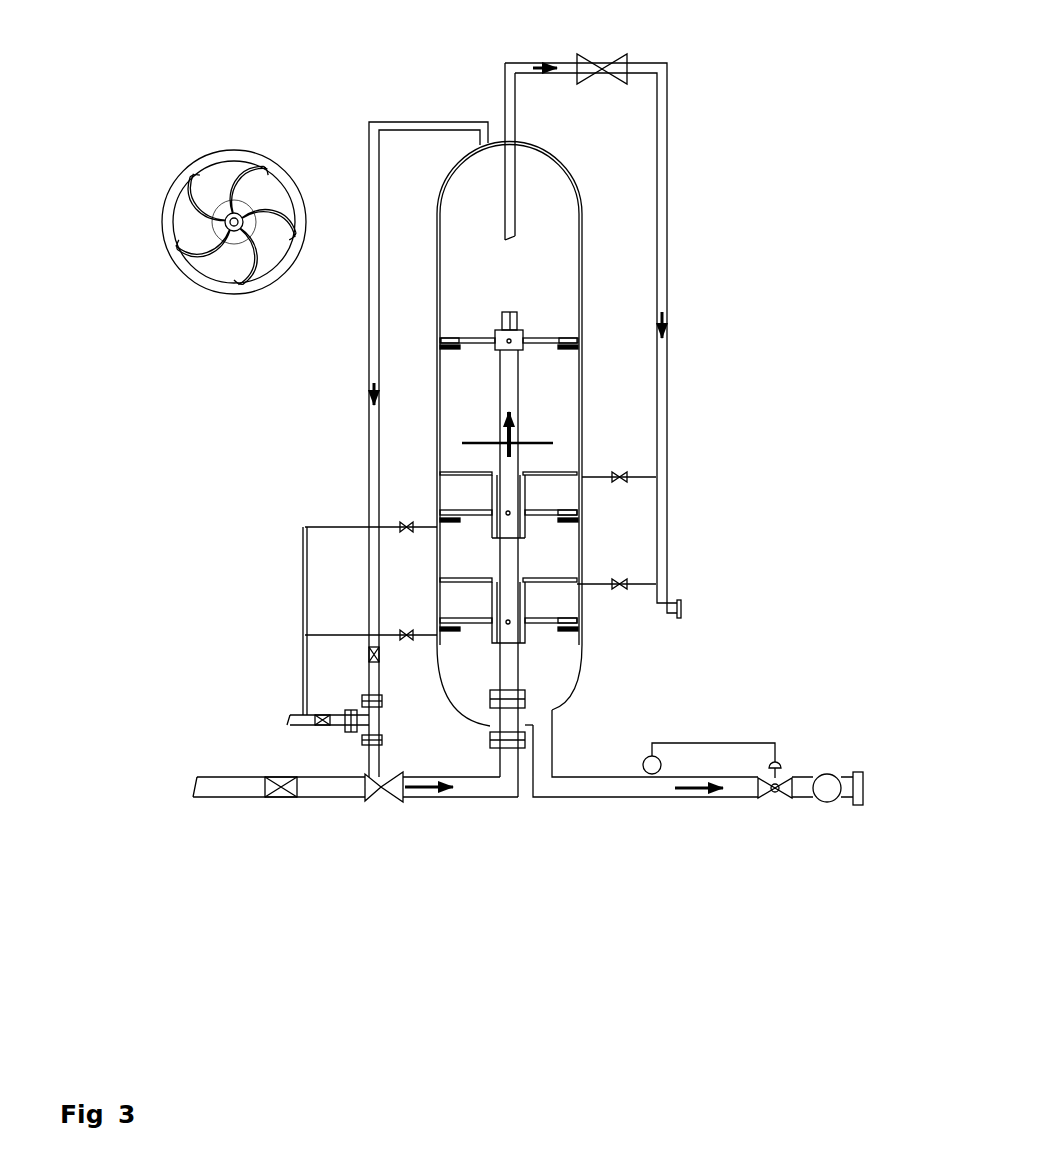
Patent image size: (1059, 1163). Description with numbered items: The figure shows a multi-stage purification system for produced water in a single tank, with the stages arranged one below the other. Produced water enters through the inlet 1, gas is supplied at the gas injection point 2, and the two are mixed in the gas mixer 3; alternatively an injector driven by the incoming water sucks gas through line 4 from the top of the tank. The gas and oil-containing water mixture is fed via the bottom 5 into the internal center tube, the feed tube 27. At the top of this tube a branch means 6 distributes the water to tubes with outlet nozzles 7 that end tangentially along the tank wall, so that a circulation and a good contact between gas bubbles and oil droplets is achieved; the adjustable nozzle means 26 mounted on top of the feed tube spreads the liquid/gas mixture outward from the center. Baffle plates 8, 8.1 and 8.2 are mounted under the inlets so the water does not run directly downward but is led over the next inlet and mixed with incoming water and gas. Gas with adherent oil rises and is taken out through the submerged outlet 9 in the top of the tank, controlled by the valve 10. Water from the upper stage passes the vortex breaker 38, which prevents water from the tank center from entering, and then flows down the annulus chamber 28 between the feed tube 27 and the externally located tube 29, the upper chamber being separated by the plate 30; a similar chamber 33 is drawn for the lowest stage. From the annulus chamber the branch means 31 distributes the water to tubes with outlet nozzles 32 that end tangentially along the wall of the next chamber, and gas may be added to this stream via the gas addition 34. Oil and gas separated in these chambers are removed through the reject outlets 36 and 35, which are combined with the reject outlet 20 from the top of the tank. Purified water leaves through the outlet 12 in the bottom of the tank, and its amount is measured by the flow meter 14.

The inlet 1 is at (195, 792).
The gas injection point 2 is at (258, 717).
The gas mixer 3 is at (393, 803).
The gas suction line 4 is at (428, 118).
The bottom feed 5 is at (488, 755).
The branch means 6 is at (223, 220).
The outlet nozzles 7 is at (171, 254).
The baffle plate 8 is at (585, 638).
The baffle plate 8.1 is at (564, 356).
The baffle plate 8.2 is at (584, 522).
The submerged outlet 9 is at (516, 188).
The valve 10 is at (614, 59).
The outlet 12 is at (558, 718).
The flow meter 14 is at (822, 801).
The reject outlet 20 is at (668, 311).
The adjustable nozzle means 26 is at (239, 206).
The feed tube 27 is at (500, 425).
The annulus chamber 28 is at (492, 490).
The externally located tube 29 is at (533, 528).
The plate 30 is at (553, 471).
The branch means 31 is at (553, 510).
The outlet nozzles 32 is at (436, 513).
The lower jacket tube 33 is at (533, 597).
The gas addition 34 is at (302, 610).
The reject outlet 35 is at (668, 587).
The reject outlet 36 is at (586, 473).
The vortex breaker 38 is at (460, 443).